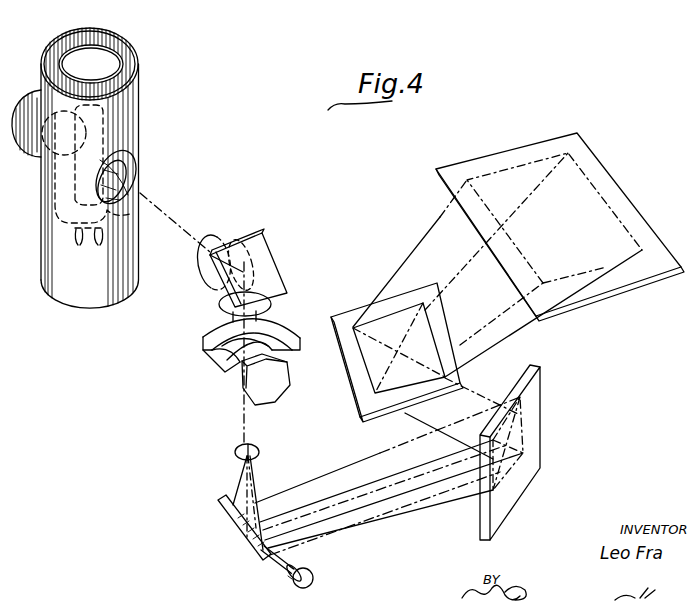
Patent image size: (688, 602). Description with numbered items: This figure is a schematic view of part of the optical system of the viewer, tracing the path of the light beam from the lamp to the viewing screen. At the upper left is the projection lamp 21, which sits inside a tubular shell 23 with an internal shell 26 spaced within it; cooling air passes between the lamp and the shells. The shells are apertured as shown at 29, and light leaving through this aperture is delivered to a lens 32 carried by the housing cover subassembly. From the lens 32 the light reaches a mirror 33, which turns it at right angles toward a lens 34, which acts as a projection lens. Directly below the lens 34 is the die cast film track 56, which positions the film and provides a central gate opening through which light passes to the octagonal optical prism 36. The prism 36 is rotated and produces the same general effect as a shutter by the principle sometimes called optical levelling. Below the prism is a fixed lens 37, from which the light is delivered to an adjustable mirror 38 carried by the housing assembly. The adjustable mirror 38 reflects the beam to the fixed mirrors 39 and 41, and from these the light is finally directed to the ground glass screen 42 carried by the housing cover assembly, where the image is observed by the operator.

The projection lamp 21 is at (124, 166).
The tubular shell 23 is at (138, 100).
The internal shell 26 is at (111, 50).
The aperture 29 is at (135, 183).
The lens 32 is at (242, 205).
The mirror 33 is at (268, 257).
The lens 34 is at (217, 302).
The octagonal optical prism 36 is at (273, 394).
The fixed lens 37 is at (258, 448).
The adjustable mirror 38 is at (243, 540).
The fixed mirror 39 is at (533, 425).
The fixed mirror 41 is at (350, 312).
The ground glass screen 42 is at (610, 183).
The die cast film track 56 is at (303, 337).